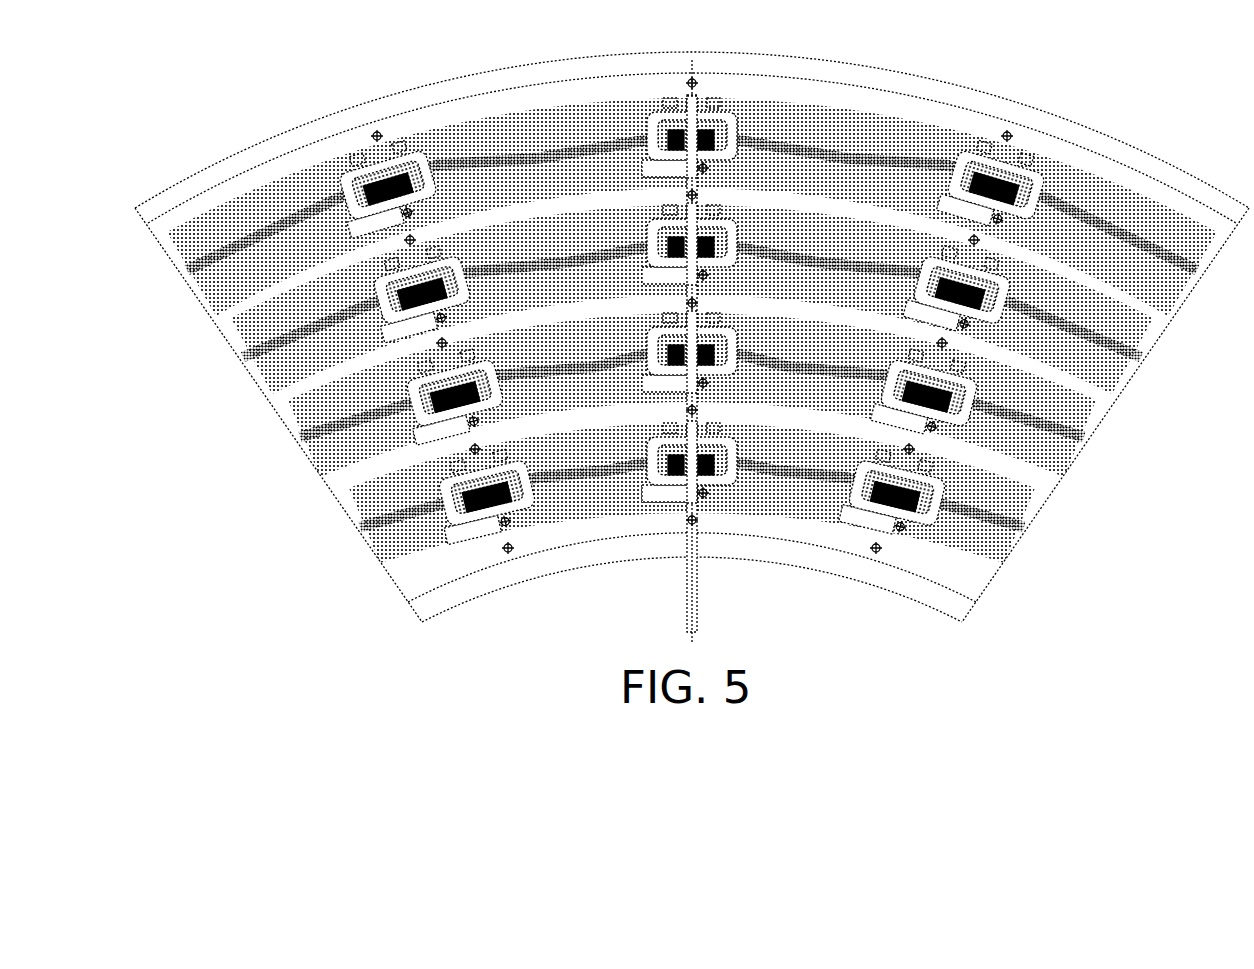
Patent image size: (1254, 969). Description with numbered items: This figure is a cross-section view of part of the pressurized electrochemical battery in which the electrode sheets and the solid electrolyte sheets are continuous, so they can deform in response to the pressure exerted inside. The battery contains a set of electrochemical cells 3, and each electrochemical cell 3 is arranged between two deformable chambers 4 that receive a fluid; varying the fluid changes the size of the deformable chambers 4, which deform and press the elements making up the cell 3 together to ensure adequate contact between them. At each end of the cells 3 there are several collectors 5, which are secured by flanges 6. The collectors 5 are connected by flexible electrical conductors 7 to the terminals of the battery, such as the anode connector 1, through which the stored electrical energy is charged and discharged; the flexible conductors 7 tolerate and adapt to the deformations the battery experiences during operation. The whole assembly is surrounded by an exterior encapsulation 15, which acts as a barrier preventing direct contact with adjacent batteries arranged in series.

The anode connector 1 is at (697, 587).
The electrochemical cell 3 is at (558, 347).
The deformable chamber 4 is at (349, 488).
The collector 5 is at (758, 86).
The flange 6 is at (745, 94).
The electrical conductor 7 is at (851, 162).
The exterior encapsulation 15 is at (190, 192).